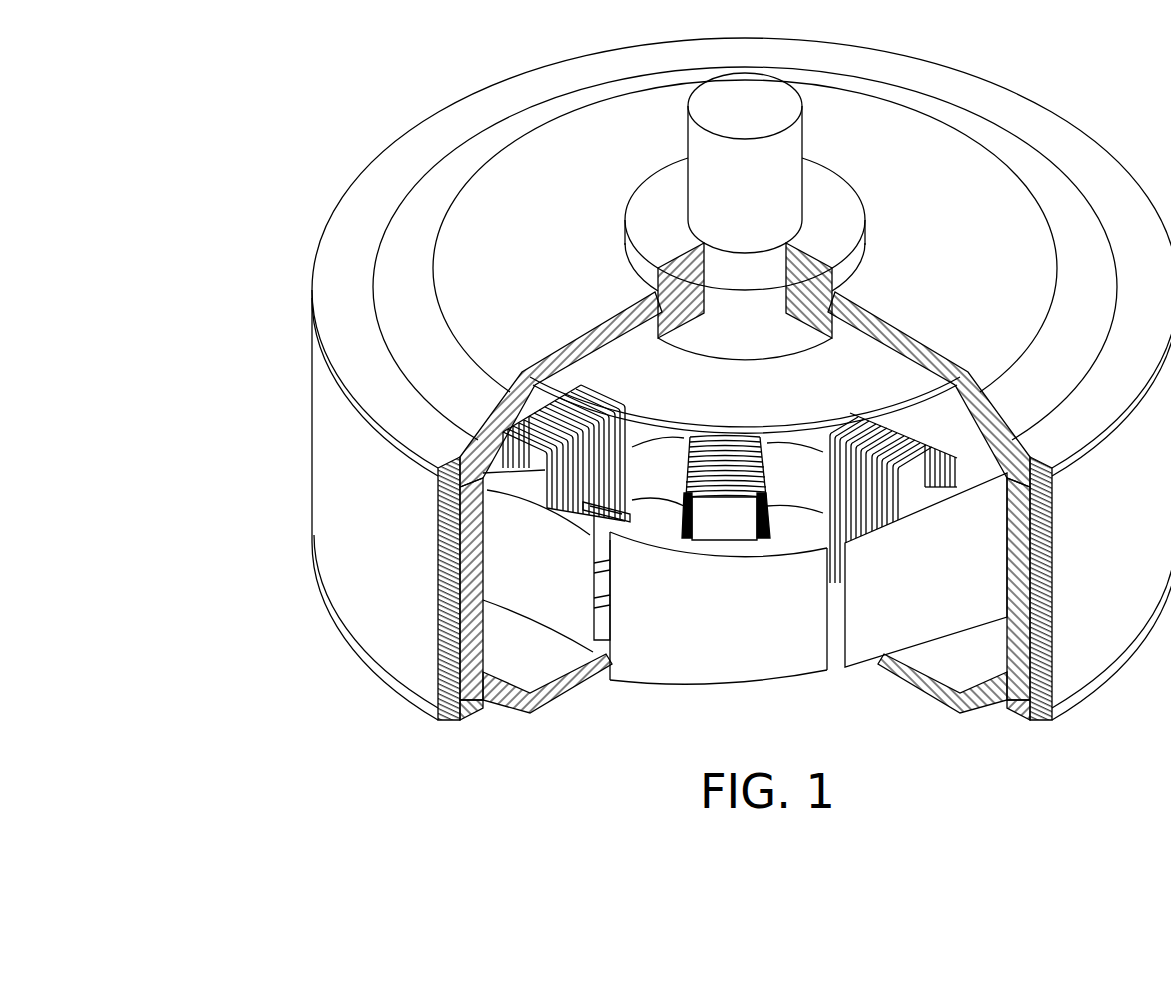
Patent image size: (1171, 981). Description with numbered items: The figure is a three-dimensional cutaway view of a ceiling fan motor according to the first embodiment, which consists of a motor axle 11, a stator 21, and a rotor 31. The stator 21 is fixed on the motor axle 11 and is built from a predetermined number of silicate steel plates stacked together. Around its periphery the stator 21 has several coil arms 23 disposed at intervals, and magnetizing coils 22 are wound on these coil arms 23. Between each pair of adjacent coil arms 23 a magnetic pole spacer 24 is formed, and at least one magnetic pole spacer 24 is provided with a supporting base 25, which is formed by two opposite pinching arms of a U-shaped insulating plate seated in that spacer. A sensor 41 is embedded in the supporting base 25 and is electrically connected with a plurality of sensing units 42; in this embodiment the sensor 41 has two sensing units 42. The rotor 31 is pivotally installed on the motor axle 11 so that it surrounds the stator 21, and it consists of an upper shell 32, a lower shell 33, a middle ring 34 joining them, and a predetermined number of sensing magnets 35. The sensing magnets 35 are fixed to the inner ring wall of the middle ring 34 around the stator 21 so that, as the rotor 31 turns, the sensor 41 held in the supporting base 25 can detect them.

The motor axle 11 is at (792, 137).
The stator 21 is at (717, 679).
The magnetizing coils 22 is at (598, 428).
The coil arms 23 is at (505, 468).
The magnetic pole spacer 24 is at (662, 512).
The supporting base 25 is at (588, 504).
The rotor 31 is at (228, 450).
The upper shell 32 is at (360, 440).
The lower shell 33 is at (310, 580).
The middle ring 34 is at (325, 500).
The sensing magnets 35 is at (463, 705).
The sensor 41 is at (598, 572).
The sensing units 42 is at (598, 534).